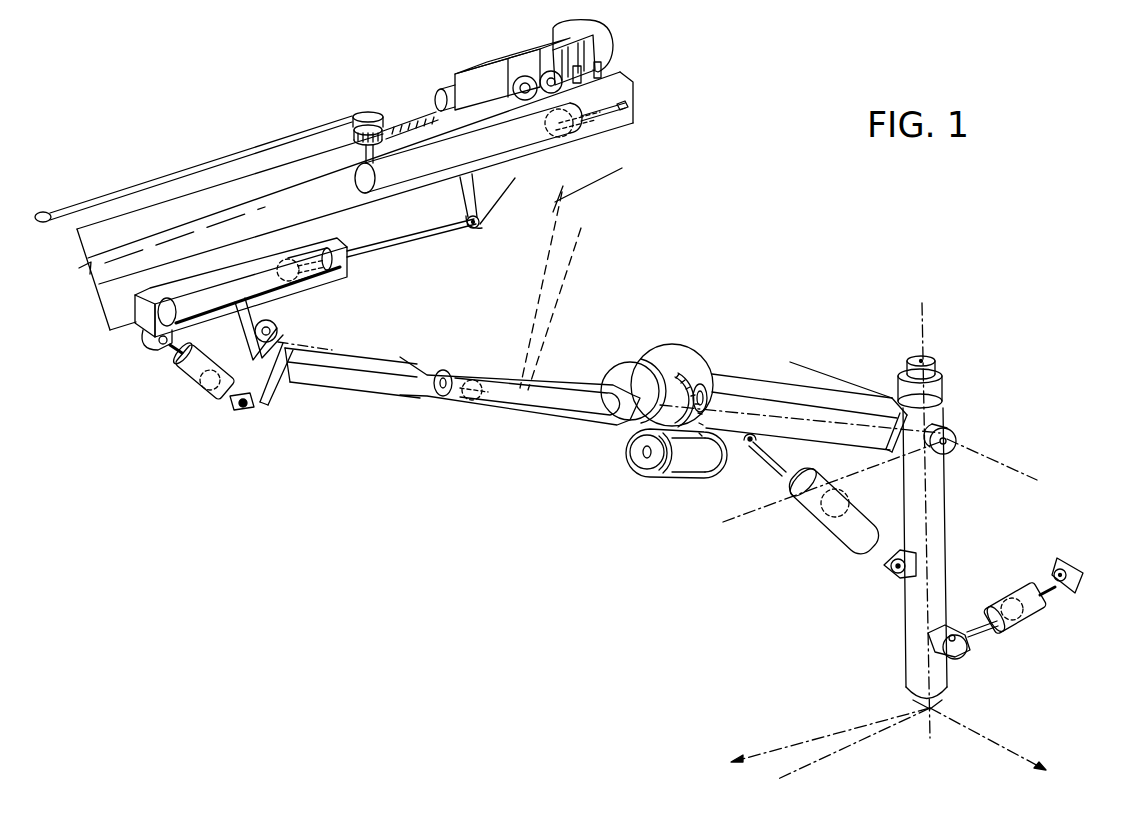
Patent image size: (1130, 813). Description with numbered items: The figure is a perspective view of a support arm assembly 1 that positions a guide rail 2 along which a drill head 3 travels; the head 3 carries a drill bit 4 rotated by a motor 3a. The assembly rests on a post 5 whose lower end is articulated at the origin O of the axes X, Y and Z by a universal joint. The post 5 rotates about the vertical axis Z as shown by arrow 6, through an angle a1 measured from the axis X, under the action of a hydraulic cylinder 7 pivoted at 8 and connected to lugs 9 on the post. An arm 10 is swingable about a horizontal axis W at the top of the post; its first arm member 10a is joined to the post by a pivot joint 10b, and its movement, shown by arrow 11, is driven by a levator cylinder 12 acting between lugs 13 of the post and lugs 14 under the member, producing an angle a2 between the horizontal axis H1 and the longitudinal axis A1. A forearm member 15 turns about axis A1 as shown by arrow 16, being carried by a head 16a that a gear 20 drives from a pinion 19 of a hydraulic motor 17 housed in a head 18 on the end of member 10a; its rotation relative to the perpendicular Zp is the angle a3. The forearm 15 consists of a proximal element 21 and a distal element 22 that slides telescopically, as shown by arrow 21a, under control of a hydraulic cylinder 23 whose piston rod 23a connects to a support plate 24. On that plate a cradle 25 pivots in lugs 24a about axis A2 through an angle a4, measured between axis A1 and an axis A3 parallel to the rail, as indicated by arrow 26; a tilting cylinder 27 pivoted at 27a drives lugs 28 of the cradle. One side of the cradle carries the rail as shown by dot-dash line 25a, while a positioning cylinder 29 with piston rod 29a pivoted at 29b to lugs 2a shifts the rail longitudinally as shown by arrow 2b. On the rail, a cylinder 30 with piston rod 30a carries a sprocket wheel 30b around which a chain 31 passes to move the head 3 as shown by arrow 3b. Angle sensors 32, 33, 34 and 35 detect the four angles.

The support arm assembly 1 is at (588, 522).
The guide rail 2 is at (183, 227).
The lugs 2a is at (459, 207).
The double-headed arrow 2b is at (440, 217).
The drill head 3 is at (502, 67).
The motor 3a is at (514, 77).
The double-headed arrow 3b is at (382, 82).
The drill bit 4 is at (90, 203).
The post 5 is at (941, 553).
The two-headed arrow 6 is at (891, 347).
The hydraulic cylinder 7 is at (1036, 606).
The pivotal connection 8 is at (1071, 572).
The lugs 9 is at (950, 630).
The arm 10 is at (777, 390).
The first arm member 10a is at (752, 377).
The pivot joint 10b is at (903, 450).
The double-headed arrow 11 is at (957, 467).
The hydraulic cylinder 12 is at (840, 533).
The lugs 13 is at (895, 578).
The lugs 14 is at (747, 447).
The forearm member 15 is at (457, 359).
The double-headed arrow 16 is at (642, 375).
The head 16a is at (617, 421).
The motor 17 is at (688, 463).
The head 18 is at (638, 480).
The pinion 19 is at (630, 457).
The gear 20 is at (682, 377).
The proximal element 21 is at (460, 408).
The double-headed arrow 21a is at (310, 344).
The distal element 22 is at (362, 395).
The hydraulic cylinder 23 is at (547, 405).
The piston rod 23a is at (340, 382).
The support plate 24 is at (263, 393).
The lugs 24a is at (253, 341).
The cradle 25 is at (345, 273).
The dot-dash line 25a is at (97, 298).
The double-headed arrow 26 is at (200, 402).
The hydraulic cylinder 27 is at (225, 397).
The pivotal connection 27a is at (250, 410).
The lugs 28 is at (158, 350).
The hydraulic cylinder 29 is at (238, 287).
The piston rod 29a is at (440, 237).
The pivotal connection 29b is at (482, 225).
The cylinder 30 is at (520, 137).
The piston rod 30a is at (633, 101).
The sprocket wheel 30b is at (351, 118).
The chain 31 is at (403, 127).
The angle sensor 32 is at (904, 359).
The angle sensor 33 is at (957, 429).
The angle sensor 34 is at (710, 390).
The angle sensor 35 is at (277, 327).
The axis A1 is at (793, 413).
The pivotal axis A2 is at (305, 336).
The axis A3 is at (622, 168).
The horizontal axis H1 is at (745, 526).
The origin O is at (949, 703).
The horizontal axis W is at (1005, 467).
The OX axis X is at (819, 742).
The OY axis Y is at (1000, 739).
The OZ axis Z is at (922, 303).
The perpendicular Z' Zp is at (555, 278).
The angle alpha 1 a1 is at (775, 752).
The angle alpha 2 a2 is at (828, 423).
The angle alpha 3 a3 is at (538, 253).
The angle alpha 4 a4 is at (407, 243).